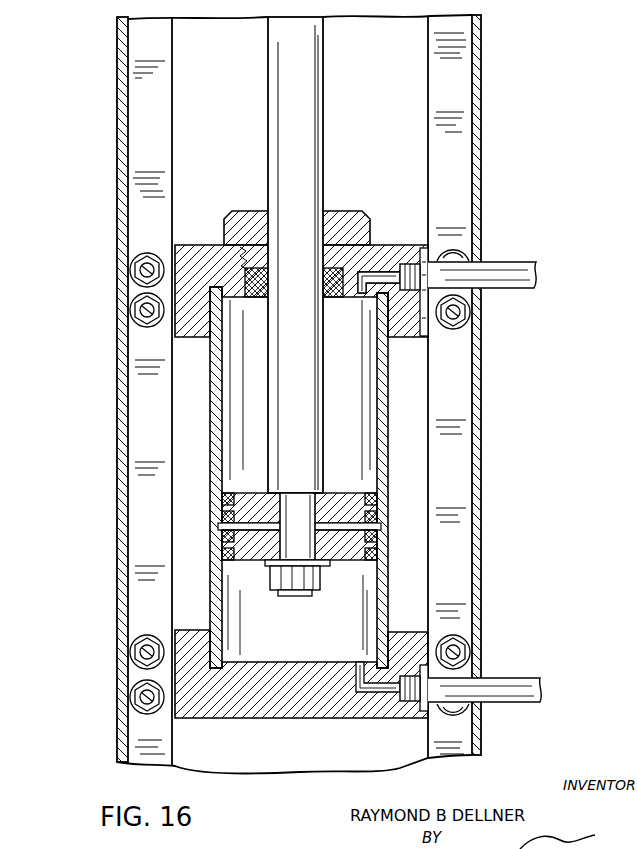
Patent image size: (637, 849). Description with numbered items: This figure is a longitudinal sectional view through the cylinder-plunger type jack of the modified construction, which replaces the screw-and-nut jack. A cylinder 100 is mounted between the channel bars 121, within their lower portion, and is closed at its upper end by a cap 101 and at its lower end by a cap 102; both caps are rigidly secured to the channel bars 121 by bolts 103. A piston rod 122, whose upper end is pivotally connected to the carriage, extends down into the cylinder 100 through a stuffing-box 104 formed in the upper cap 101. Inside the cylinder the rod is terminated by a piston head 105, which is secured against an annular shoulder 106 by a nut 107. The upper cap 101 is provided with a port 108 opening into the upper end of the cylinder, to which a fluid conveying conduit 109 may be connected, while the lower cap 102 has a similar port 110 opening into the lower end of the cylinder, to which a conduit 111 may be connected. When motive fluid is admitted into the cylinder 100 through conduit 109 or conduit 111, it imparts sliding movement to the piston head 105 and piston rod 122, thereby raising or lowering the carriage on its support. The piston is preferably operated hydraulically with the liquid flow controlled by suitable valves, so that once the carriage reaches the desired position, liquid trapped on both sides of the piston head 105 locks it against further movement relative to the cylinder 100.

The cylinder 100 is at (380, 416).
The upper cap 101 is at (430, 247).
The lower cap 102 is at (272, 697).
The bolts 103 is at (135, 308).
The stuffing-box 104 is at (335, 228).
The piston head 105 is at (332, 510).
The annular shoulder 106 is at (272, 507).
The nut 107 is at (293, 590).
The port 108 is at (362, 288).
The fluid conveying conduit 109 is at (525, 282).
The port 110 is at (358, 680).
The conduit 111 is at (548, 690).
The channel bars 121 is at (117, 120).
The piston rod 122 is at (301, 81).